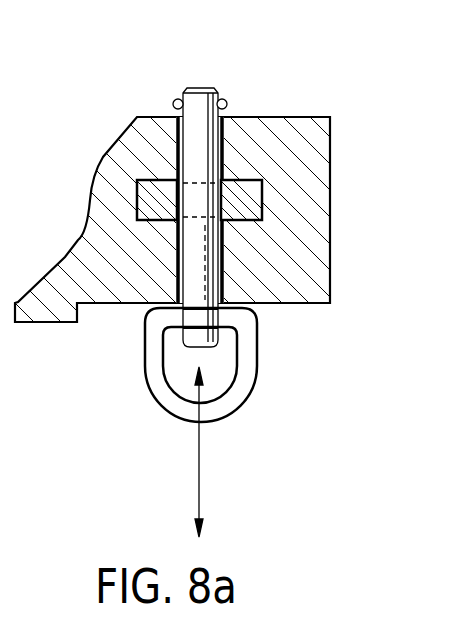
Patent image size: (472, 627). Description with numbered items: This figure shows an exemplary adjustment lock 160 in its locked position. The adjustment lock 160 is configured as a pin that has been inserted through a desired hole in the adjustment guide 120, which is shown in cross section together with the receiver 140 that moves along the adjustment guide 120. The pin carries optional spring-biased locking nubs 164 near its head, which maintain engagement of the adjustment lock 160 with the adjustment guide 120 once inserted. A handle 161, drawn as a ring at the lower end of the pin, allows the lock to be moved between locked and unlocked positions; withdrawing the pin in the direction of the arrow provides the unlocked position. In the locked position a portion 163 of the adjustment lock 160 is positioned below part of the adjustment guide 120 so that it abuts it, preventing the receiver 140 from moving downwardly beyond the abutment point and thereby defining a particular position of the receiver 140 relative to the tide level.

The adjustment guide 120 is at (295, 167).
The receiver 140 is at (317, 252).
The adjustment lock 160 is at (192, 273).
The handle 161 is at (252, 372).
The portion of adjustment lock 163 is at (197, 178).
The spring-biased locking nubs 164 is at (175, 101).